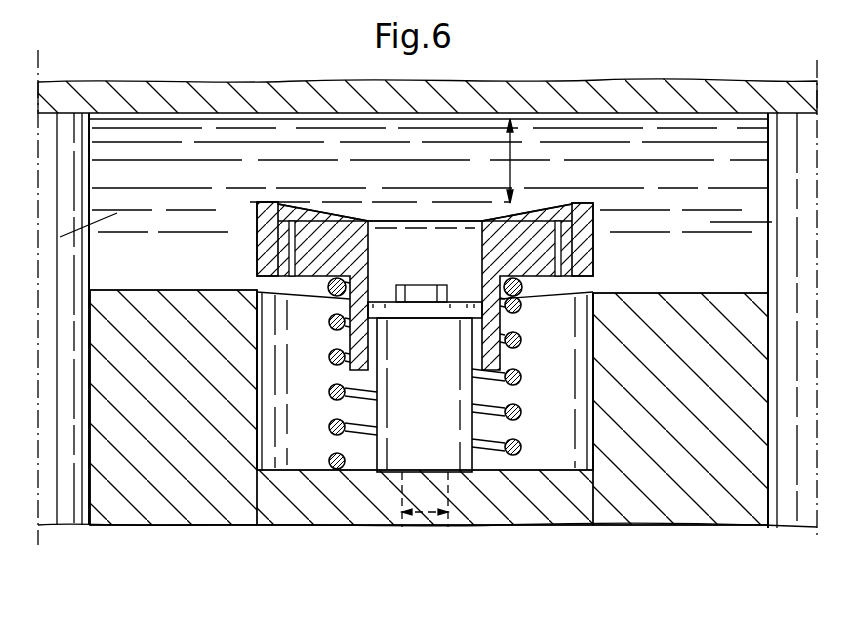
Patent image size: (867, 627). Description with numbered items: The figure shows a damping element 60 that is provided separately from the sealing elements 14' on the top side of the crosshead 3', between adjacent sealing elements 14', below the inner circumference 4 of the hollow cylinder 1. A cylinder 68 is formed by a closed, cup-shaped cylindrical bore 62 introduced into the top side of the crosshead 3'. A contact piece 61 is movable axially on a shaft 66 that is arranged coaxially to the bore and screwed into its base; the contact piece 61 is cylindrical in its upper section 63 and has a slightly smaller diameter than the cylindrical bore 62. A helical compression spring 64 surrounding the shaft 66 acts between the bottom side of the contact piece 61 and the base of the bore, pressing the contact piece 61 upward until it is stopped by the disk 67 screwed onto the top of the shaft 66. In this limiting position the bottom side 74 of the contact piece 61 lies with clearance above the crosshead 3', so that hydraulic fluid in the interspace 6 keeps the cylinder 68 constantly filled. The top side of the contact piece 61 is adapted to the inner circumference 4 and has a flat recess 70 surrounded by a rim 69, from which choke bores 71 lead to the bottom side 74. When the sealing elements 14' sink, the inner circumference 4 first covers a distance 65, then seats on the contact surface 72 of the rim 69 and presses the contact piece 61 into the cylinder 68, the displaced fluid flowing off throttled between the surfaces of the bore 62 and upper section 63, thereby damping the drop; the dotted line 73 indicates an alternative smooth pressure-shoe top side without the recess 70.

The hollow cylinder 1 is at (57, 85).
The inner circumference 4 is at (47, 115).
The interspace 6 is at (430, 180).
The sealing elements 14' is at (416, 216).
The crosshead 3' is at (429, 407).
The damping element 60 is at (256, 364).
The contact piece 61 is at (594, 266).
The cylindrical bore 62 is at (258, 324).
The upper section 63 is at (257, 228).
The helical compression spring 64 is at (331, 430).
The distance 65 is at (512, 165).
The shaft 66 is at (397, 453).
The disk 67 is at (367, 311).
The cylinder 68 is at (305, 372).
The rim 69 is at (590, 214).
The flat recess 70 is at (331, 208).
The choke bores 71 is at (278, 247).
The contact surface 72 is at (586, 204).
The dotted line 73 is at (413, 204).
The bottom side 74 is at (270, 284).